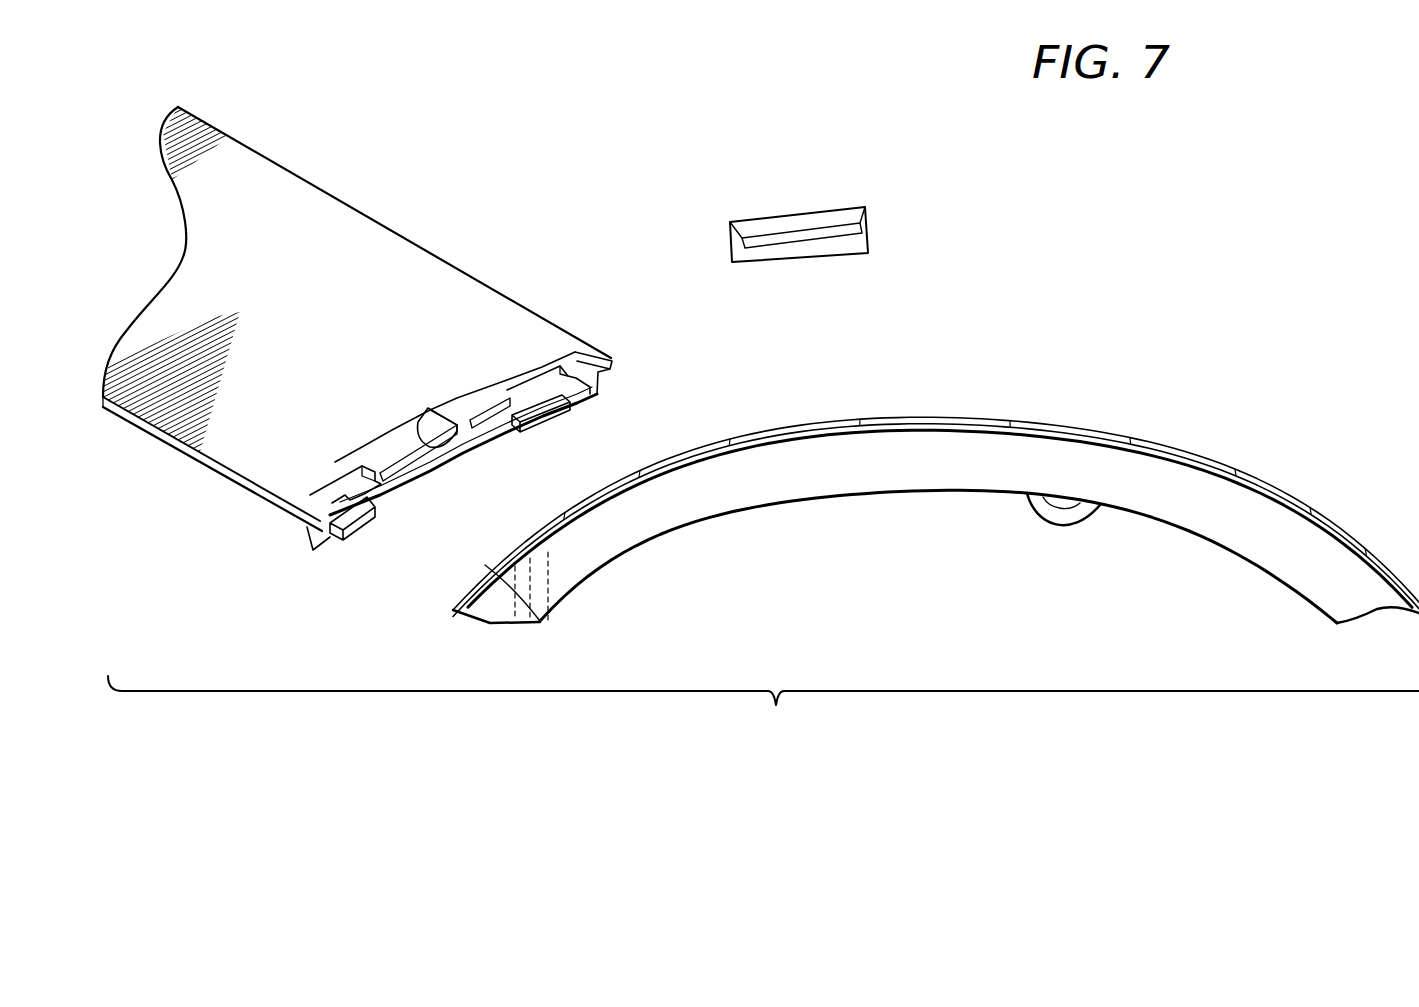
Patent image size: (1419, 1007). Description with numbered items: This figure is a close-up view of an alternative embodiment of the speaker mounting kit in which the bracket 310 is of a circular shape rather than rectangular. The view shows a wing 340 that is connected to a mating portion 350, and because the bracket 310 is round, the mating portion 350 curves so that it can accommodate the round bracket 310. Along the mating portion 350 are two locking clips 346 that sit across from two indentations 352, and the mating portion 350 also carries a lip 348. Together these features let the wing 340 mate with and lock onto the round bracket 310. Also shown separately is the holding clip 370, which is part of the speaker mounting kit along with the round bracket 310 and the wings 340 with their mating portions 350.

The bracket 310 is at (955, 438).
The wing 340 is at (352, 227).
The locking clip 346 is at (547, 417).
The lip 348 is at (420, 420).
The mating portion 350 is at (585, 353).
The indentation 352 is at (538, 380).
The holding clip 370 is at (868, 232).